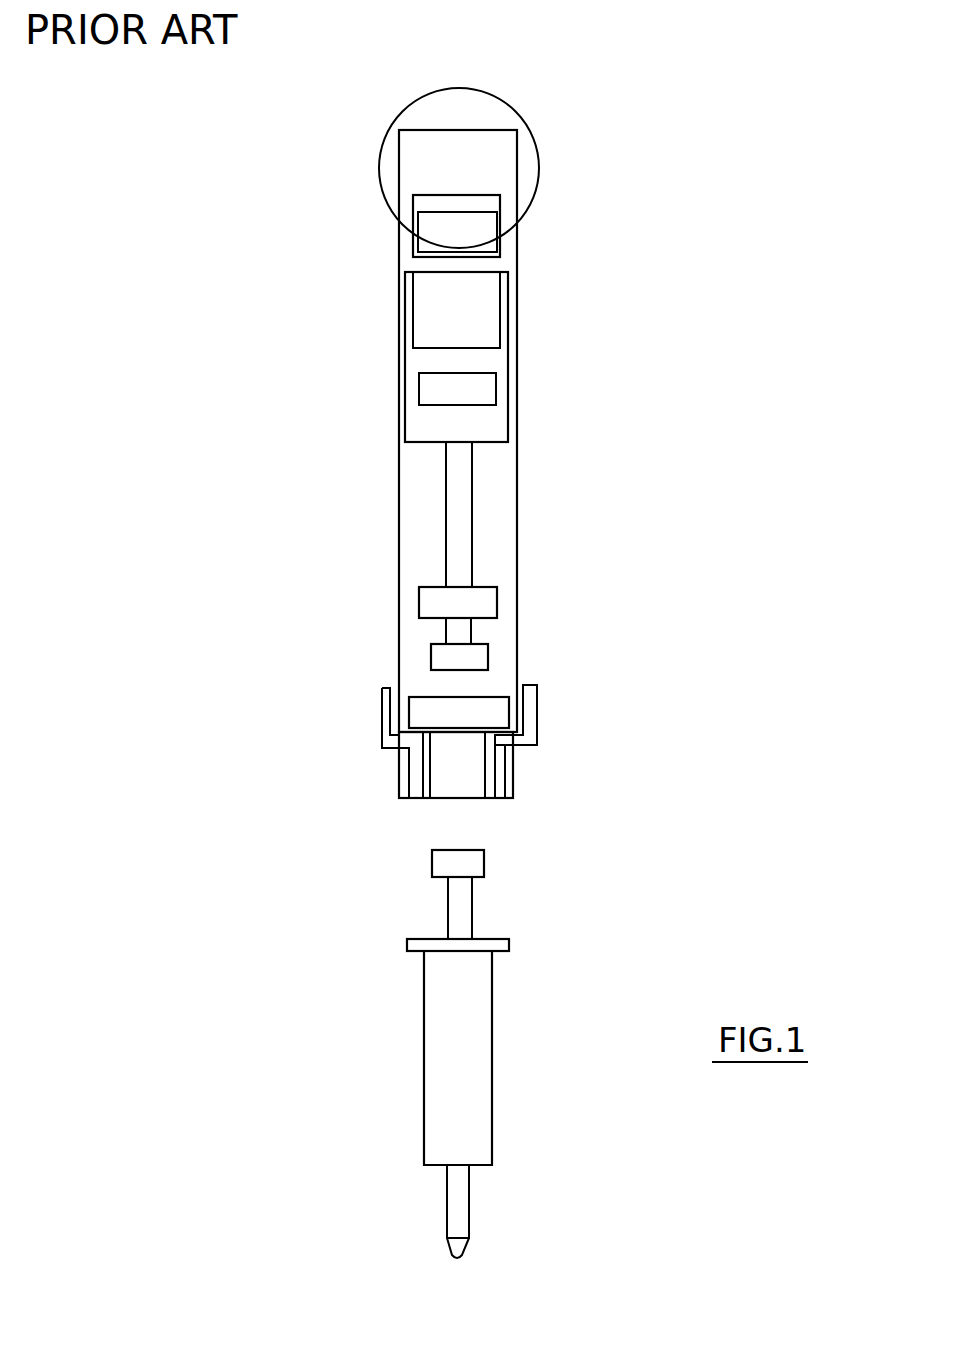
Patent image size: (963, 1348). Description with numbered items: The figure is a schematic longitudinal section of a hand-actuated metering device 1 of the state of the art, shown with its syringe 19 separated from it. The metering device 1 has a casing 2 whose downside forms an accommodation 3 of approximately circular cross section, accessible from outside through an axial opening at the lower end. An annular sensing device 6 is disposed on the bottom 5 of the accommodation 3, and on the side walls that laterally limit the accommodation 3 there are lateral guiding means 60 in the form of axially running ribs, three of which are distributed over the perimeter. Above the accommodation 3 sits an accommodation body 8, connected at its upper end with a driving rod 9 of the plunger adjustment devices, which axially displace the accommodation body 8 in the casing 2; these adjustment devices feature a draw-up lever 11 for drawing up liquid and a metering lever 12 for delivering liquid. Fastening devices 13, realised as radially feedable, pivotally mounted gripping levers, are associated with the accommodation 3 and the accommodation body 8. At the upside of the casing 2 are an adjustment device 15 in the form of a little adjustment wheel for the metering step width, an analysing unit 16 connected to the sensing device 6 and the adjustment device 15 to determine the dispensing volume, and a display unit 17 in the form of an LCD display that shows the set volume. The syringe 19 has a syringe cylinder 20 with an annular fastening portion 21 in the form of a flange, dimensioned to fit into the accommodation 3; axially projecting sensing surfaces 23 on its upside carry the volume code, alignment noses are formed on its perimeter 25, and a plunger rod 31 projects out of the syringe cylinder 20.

The metering device 1 is at (540, 462).
The casing 2 is at (518, 553).
The accommodation 3 is at (502, 793).
The bottom 5 is at (418, 738).
The sensing device 6 is at (425, 715).
The accommodation body 8 is at (432, 657).
The driving rod 9 is at (455, 490).
The draw-up lever 11 is at (437, 598).
The metering lever 12 is at (483, 390).
The fastening devices 13 is at (535, 735).
The adjustment device 15 is at (470, 122).
The analysing unit 16 is at (483, 307).
The display unit 17 is at (492, 224).
The syringe 19 is at (500, 1092).
The syringe cylinder 20 is at (430, 1018).
The fastening portion 21 is at (512, 948).
The sensing surfaces 23 is at (433, 940).
The perimeter 25 is at (413, 947).
The plunger rod 31 is at (475, 862).
The lateral guiding means 60 is at (427, 783).